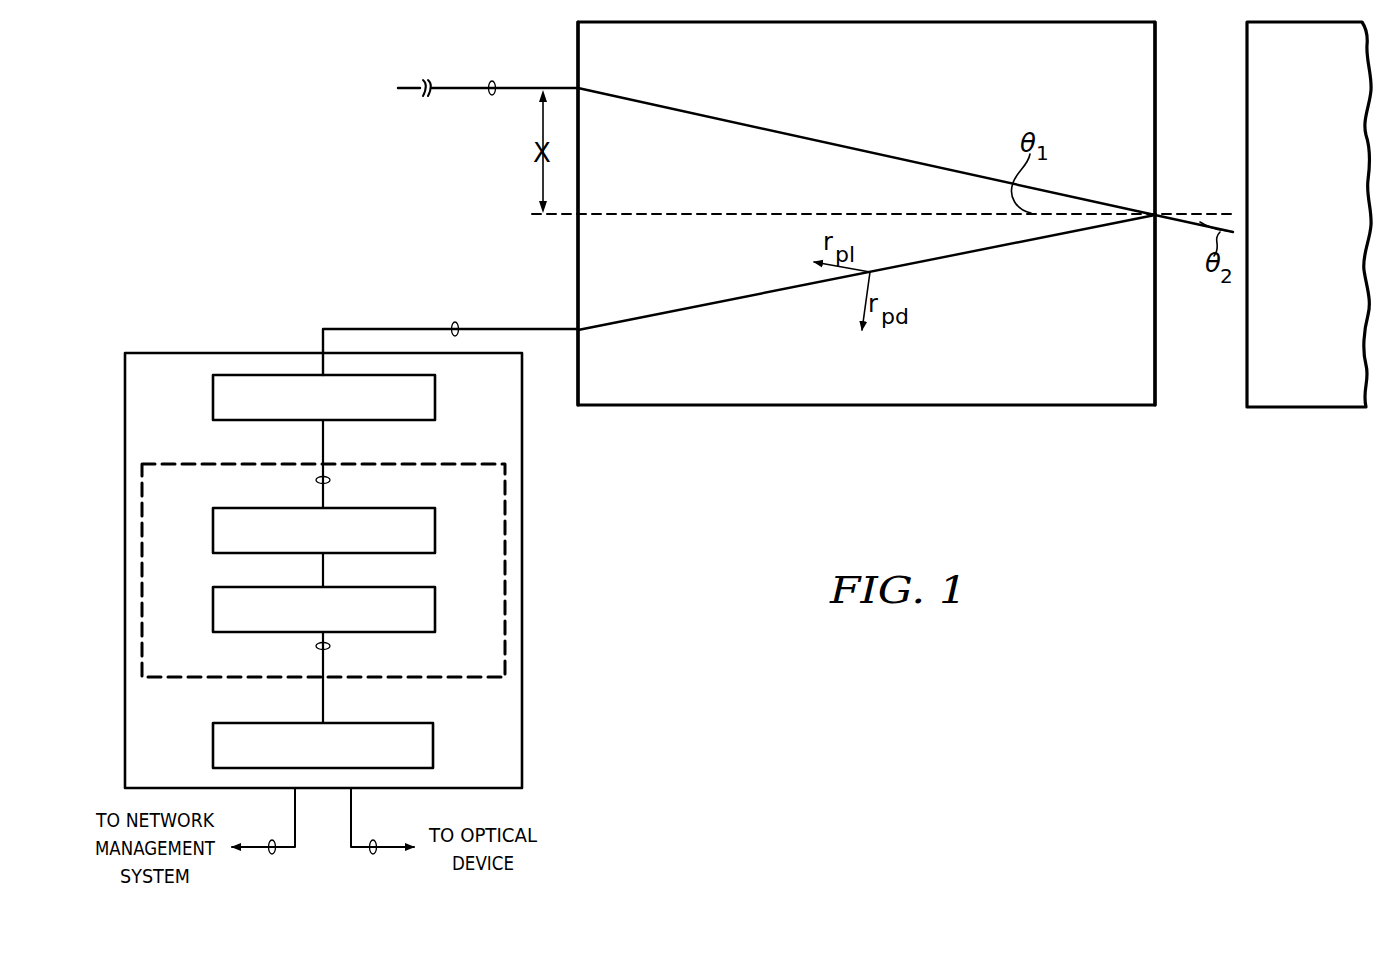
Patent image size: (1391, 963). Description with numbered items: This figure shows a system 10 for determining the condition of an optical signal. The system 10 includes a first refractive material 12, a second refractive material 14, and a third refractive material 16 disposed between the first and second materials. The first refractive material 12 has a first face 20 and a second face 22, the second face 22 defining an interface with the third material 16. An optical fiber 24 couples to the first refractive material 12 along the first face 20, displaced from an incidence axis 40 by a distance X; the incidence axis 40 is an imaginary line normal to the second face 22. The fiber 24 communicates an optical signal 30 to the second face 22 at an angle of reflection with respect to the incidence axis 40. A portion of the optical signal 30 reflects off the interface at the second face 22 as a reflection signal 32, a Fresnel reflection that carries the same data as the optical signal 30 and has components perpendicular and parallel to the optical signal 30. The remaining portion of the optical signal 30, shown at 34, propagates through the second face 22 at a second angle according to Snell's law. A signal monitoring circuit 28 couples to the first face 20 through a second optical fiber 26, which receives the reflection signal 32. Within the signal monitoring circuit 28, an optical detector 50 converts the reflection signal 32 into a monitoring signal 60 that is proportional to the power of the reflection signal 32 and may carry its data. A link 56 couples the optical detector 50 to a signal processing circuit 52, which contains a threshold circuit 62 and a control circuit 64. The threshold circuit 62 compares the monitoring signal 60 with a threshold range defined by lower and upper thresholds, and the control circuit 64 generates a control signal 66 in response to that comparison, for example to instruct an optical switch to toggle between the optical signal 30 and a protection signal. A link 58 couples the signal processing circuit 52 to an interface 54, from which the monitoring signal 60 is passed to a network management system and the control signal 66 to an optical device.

The system 10 is at (298, 162).
The first refractive material 12 is at (880, 408).
The second refractive material 14 is at (1304, 410).
The third refractive material 16 is at (1204, 410).
The first face 20 is at (577, 56).
The second face 22 is at (1154, 58).
The optical fiber 24 is at (462, 86).
The optical fiber 26 is at (362, 328).
The signal monitoring circuit 28 is at (272, 352).
The optical signal 30 is at (490, 96).
The reflection signal 32 is at (455, 320).
The exit optical signal path 34 is at (1193, 226).
The incidence axis 40 is at (638, 212).
The optical detector 50 is at (212, 396).
The signal processing circuit 52 is at (461, 463).
The interface 54 is at (435, 742).
The link 56 is at (325, 434).
The link 58 is at (325, 693).
The monitoring signal 60 is at (316, 481).
The threshold circuit 62 is at (435, 530).
The control circuit 64 is at (212, 608).
The control signal 66 is at (373, 855).